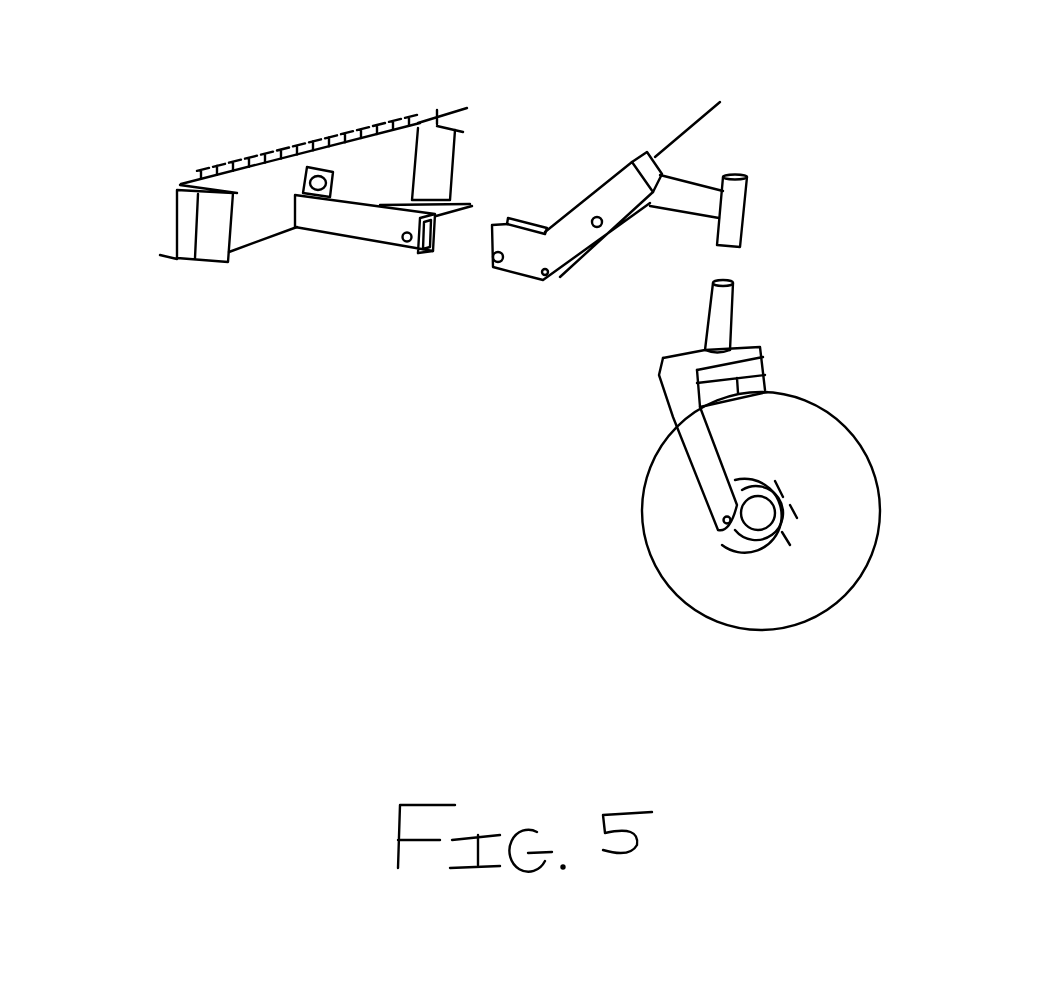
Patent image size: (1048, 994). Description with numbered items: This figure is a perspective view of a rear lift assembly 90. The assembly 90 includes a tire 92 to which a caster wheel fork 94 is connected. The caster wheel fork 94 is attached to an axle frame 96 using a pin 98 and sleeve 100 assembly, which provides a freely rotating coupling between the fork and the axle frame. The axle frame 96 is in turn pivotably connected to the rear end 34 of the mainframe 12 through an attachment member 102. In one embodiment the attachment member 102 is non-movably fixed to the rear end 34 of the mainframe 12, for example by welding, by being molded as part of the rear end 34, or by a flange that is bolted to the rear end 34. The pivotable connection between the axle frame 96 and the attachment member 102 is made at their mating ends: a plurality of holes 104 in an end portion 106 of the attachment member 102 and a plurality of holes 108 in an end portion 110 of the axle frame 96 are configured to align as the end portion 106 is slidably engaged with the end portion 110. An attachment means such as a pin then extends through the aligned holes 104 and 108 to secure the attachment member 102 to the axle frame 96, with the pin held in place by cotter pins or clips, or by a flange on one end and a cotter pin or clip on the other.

The mainframe 12 is at (263, 143).
The rear end 34 is at (253, 227).
The rear lift assembly 90 is at (333, 438).
The tire 92 is at (857, 520).
The caster wheel fork 94 is at (760, 343).
The axle frame 96 is at (707, 112).
The pin 98 is at (730, 303).
The sleeve 100 is at (743, 220).
The attachment member 102 is at (337, 240).
The holes 104 is at (401, 249).
The end portion 106 is at (432, 250).
The holes 108 is at (489, 265).
The end portion 110 is at (572, 214).